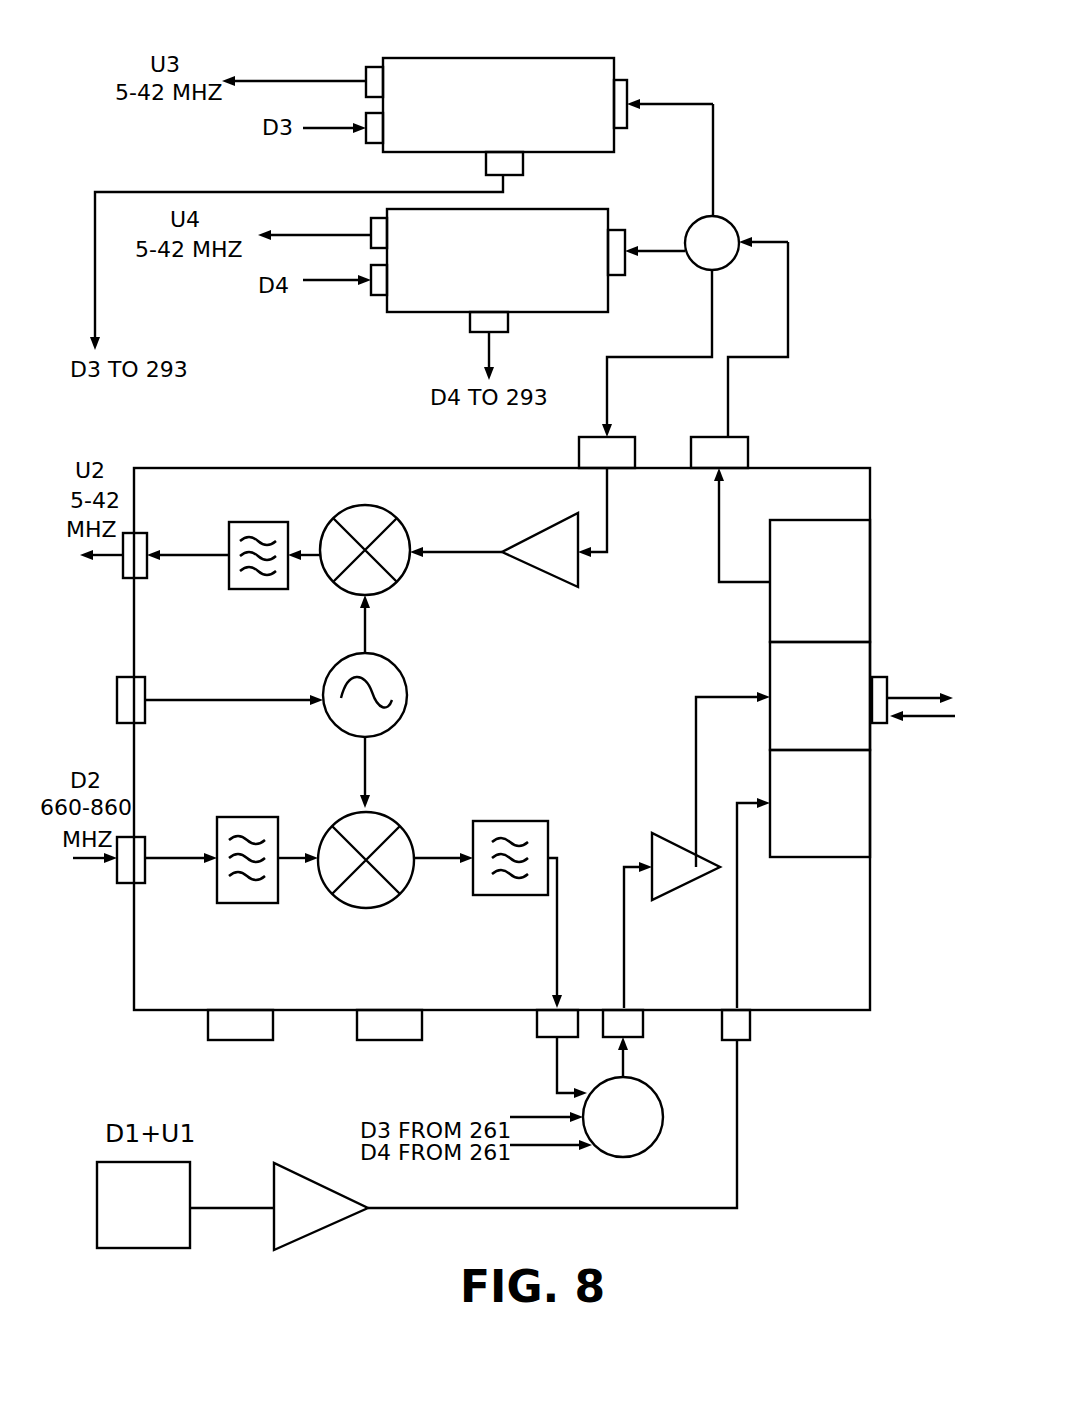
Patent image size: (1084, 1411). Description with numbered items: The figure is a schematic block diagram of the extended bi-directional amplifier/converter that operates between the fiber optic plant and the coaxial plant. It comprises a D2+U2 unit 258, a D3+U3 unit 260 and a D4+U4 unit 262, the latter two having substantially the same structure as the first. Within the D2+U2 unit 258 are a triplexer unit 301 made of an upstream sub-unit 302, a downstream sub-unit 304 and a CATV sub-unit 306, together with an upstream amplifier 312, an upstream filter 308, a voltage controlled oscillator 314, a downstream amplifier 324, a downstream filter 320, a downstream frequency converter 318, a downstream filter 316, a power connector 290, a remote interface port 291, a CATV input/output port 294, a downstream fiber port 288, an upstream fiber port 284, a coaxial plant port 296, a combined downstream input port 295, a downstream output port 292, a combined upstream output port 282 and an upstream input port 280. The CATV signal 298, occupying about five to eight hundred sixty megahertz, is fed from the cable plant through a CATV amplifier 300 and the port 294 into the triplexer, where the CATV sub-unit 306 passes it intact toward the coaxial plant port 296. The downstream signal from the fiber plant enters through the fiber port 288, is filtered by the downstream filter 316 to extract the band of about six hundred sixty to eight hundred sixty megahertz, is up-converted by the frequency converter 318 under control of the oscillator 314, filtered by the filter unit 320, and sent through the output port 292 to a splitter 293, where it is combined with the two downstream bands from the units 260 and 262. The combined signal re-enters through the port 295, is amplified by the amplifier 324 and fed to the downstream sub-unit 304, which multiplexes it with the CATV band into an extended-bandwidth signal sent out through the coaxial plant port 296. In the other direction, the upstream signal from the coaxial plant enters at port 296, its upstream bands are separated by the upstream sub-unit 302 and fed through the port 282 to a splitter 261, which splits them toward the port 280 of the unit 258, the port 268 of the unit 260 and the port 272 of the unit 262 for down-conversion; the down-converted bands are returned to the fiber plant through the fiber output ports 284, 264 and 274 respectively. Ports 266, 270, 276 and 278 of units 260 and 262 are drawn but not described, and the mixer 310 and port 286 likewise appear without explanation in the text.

The D2+U2 unit 258 is at (830, 465).
The D3+U3 unit 260 is at (497, 57).
The splitter 261 is at (733, 219).
The D4+U4 unit 262 is at (552, 208).
The fiber output port 264 is at (383, 93).
The D3 input port 266 is at (383, 138).
The port 268 is at (622, 80).
The D3 output port 270 is at (486, 163).
The port 272 is at (618, 231).
The fiber output port 274 is at (388, 244).
The D4 input port 276 is at (388, 291).
The D4 output port 278 is at (470, 332).
The upstream input port 280 is at (635, 440).
The combined upstream output port 282 is at (748, 441).
The upstream fiber port 284 is at (147, 541).
The port 286 is at (145, 691).
The downstream fiber port 288 is at (145, 846).
The power connector 290 is at (208, 1033).
The remote interface port 291 is at (357, 1035).
The downstream output port 292 is at (537, 1030).
The splitter 293 is at (620, 1157).
The CATV input/output port 294 is at (750, 1025).
The combined downstream input port 295 is at (643, 1025).
The coaxial plant port 296 is at (880, 677).
The CATV signal 298 is at (930, 718).
The CATV amplifier 300 is at (905, 692).
The triplexer unit 301 is at (770, 643).
The upstream sub-unit 302 is at (798, 520).
The downstream sub-unit 304 is at (770, 748).
The CATV sub-unit 306 is at (800, 858).
The upstream filter 308 is at (262, 521).
The mixer 310 is at (397, 519).
The upstream amplifier 312 is at (538, 578).
The voltage controlled oscillator 314 is at (402, 677).
The downstream filter 316 is at (245, 817).
The downstream frequency converter 318 is at (402, 828).
The downstream filter 320 is at (505, 821).
The downstream amplifier 324 is at (680, 886).